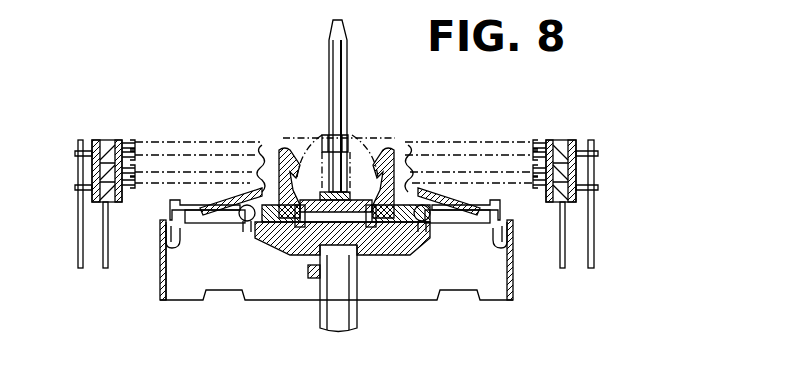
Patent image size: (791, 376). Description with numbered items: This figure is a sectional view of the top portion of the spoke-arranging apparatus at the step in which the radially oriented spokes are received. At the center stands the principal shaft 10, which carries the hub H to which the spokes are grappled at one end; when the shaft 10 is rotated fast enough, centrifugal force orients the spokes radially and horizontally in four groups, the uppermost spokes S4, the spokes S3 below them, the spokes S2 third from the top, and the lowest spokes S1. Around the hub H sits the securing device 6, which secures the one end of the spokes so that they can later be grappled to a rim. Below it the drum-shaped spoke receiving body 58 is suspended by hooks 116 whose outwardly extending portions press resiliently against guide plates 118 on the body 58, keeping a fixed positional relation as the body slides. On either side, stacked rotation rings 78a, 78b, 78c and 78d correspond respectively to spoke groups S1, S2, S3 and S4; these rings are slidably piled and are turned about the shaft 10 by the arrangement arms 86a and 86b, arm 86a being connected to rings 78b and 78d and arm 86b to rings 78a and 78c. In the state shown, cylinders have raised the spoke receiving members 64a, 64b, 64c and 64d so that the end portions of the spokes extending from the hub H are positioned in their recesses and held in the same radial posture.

The securing device 6 is at (298, 157).
The principal shaft 10 is at (327, 318).
The spoke receiving body 58 is at (160, 278).
The spoke receiving member 64a is at (549, 202).
The spoke receiving member 64b is at (577, 170).
The spoke receiving member 64c is at (548, 145).
The spoke receiving member 64d is at (540, 145).
The rotation ring 78a is at (97, 193).
The rotation ring 78b is at (97, 177).
The rotation ring 78c is at (118, 148).
The rotation ring 78d is at (100, 140).
The arrangement arm 86a is at (78, 253).
The arrangement arm 86b is at (594, 253).
The hook 116 is at (177, 238).
The guide plate 118 is at (168, 290).
The hub H is at (362, 138).
The spokes S1 is at (176, 185).
The spokes S2 is at (251, 144).
The spokes S3 is at (223, 154).
The spokes S4 is at (195, 141).